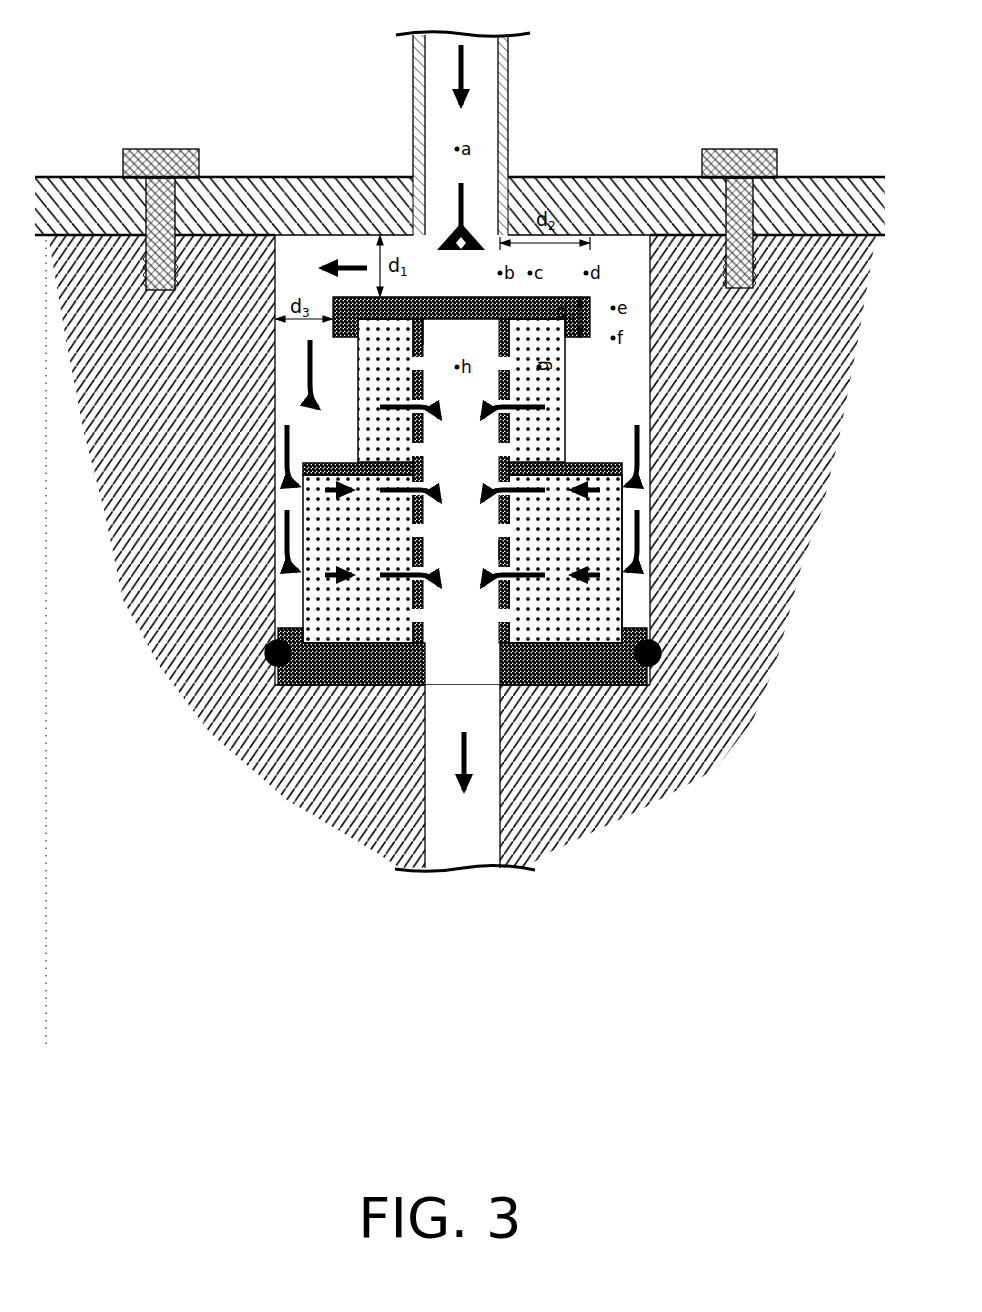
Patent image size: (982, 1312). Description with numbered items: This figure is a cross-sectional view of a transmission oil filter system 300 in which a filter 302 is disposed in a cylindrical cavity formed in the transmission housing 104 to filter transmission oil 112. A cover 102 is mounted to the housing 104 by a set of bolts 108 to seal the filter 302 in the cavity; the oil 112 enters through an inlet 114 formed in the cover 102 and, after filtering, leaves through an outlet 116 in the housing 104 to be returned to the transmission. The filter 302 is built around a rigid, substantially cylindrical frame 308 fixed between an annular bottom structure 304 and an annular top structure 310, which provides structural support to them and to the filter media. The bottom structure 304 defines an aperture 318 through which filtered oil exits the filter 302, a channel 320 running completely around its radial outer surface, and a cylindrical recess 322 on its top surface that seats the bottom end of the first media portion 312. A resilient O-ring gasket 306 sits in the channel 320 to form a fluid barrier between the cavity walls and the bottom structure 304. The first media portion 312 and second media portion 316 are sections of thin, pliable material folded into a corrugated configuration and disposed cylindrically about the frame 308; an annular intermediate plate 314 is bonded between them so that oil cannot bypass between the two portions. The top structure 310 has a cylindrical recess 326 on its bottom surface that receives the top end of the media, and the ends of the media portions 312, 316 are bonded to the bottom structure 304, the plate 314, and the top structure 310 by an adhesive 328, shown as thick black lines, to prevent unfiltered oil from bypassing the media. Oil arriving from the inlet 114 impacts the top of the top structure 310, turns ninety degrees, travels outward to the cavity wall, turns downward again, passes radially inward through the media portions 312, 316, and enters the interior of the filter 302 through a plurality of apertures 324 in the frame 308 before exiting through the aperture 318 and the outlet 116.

The transmission oil filter system 300 is at (222, 90).
The cover 102 is at (290, 200).
The transmission housing 104 is at (162, 419).
The bolts 108 is at (160, 158).
The transmission oil 112 is at (447, 208).
The inlet 114 is at (492, 141).
The outlet 116 is at (480, 832).
The filter 302 is at (357, 452).
The bottom structure 304 is at (348, 670).
The gasket 306 is at (276, 644).
The frame 308 is at (498, 546).
The top structure 310 is at (470, 315).
The first media portion 312 is at (544, 548).
The intermediate plate 314 is at (600, 463).
The second media portion 316 is at (521, 449).
The aperture 318 is at (461, 487).
The channel 320 is at (628, 673).
The recess 322 is at (345, 630).
The apertures 324 is at (430, 450).
The cylindrical recess 326 is at (446, 328).
The adhesive 328 is at (382, 326).